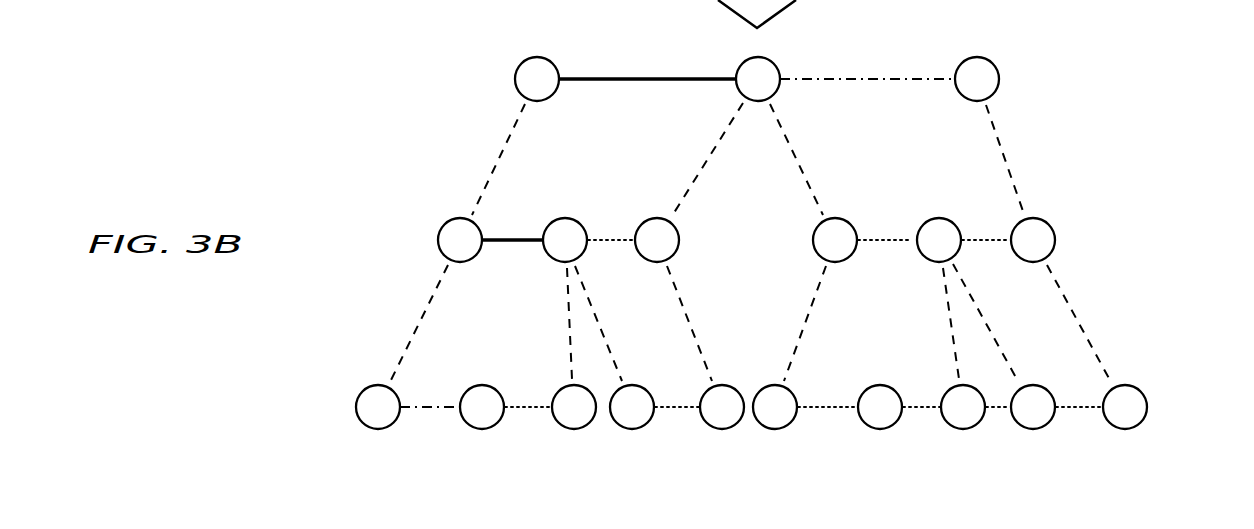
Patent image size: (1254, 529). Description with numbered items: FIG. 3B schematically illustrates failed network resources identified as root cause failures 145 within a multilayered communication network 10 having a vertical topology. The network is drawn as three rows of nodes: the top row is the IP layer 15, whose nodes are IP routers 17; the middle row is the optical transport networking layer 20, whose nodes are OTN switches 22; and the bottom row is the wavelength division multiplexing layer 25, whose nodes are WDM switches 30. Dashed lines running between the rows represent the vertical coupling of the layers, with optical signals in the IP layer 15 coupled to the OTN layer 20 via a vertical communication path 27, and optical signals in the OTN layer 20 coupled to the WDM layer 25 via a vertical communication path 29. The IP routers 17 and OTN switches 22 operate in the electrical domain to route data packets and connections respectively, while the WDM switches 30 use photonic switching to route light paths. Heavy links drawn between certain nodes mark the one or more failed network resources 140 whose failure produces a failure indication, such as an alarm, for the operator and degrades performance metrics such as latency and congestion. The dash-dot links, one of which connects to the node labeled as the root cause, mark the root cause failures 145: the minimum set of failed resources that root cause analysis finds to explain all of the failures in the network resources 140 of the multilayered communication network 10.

The multilayered communication network 10 is at (412, 80).
The IP layer 15 is at (1024, 79).
The IP router 17 is at (1000, 72).
The optical transport networking layer 20 is at (1083, 239).
The OTN switch 22 is at (1058, 232).
The wavelength division multiplexing layer 25 is at (1164, 407).
The vertical communication path 27 is at (1010, 152).
The vertical communication path 29 is at (1072, 305).
The WDM switch 30 is at (1143, 391).
The failed network resource 140 is at (613, 82).
The root cause failure 145 is at (865, 82).